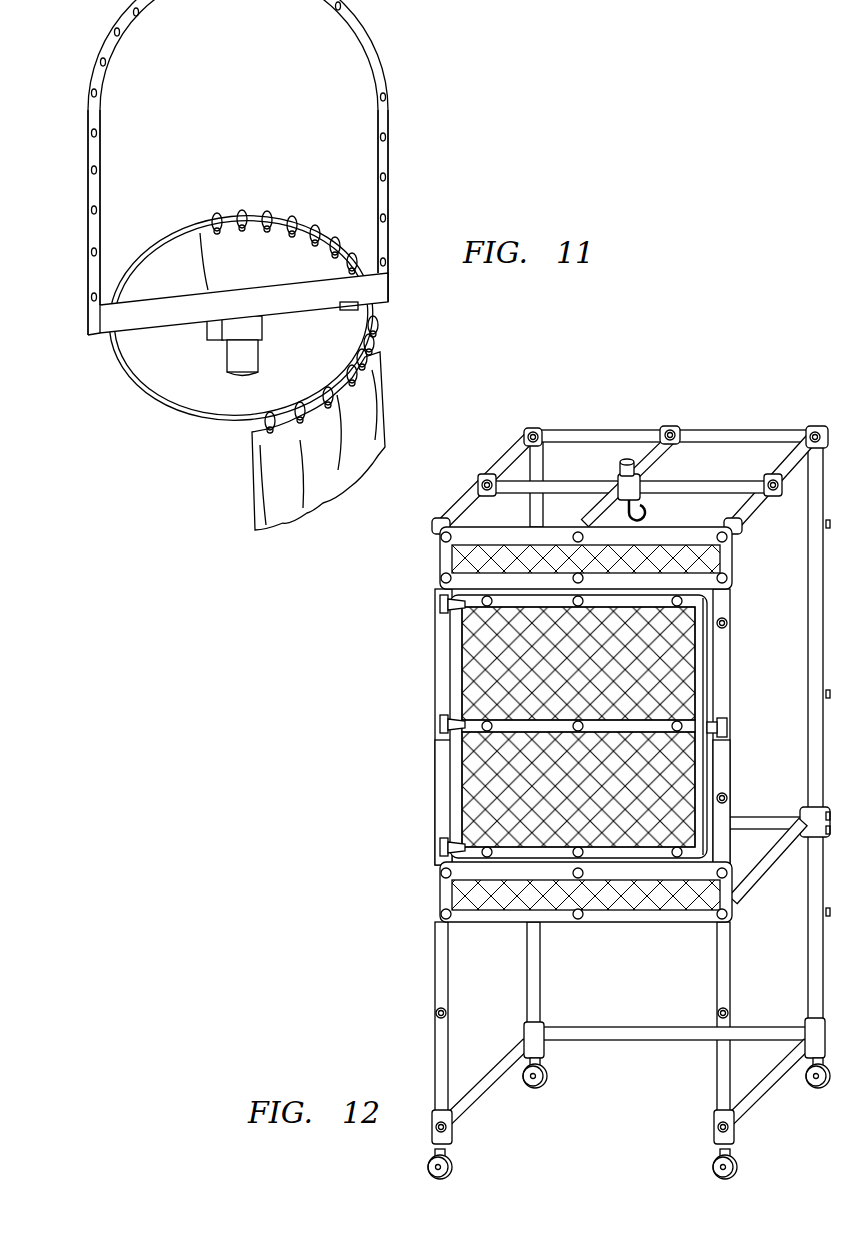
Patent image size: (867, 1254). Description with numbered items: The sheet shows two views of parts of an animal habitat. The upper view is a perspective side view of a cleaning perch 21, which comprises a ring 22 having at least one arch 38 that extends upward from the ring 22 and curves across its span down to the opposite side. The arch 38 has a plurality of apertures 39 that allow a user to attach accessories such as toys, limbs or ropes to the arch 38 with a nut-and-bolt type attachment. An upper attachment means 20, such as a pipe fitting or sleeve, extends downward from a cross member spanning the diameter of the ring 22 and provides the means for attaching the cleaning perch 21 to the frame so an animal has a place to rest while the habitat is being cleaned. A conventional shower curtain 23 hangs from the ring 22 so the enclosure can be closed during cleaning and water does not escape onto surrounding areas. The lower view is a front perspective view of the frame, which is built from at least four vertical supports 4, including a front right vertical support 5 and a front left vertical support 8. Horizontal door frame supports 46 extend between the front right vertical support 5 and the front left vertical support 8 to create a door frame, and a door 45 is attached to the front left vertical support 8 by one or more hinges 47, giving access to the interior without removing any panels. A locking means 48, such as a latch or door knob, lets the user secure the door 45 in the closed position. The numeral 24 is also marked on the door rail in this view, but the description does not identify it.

In FIG. 12, the vertical supports 4 is at (437, 668).
In FIG. 12, the front right vertical support 5 is at (732, 762).
In FIG. 12, the front left vertical support 8 is at (437, 772).
In FIG. 11, the upper attachment means 20 is at (226, 360).
In FIG. 11, the cleaning perch 21 is at (398, 58).
In FIG. 11, the ring 22 is at (130, 382).
In FIG. 11, the shower curtain 23 is at (290, 478).
In FIG. 12, the door 24 is at (683, 603).
In FIG. 11, the arch 38 is at (88, 195).
In FIG. 11, the apertures 39 is at (92, 133).
In FIG. 12, the door 45 is at (652, 683).
In FIG. 12, the horizontal door frame supports 46 is at (645, 600).
In FIG. 12, the hinges 47 is at (440, 606).
In FIG. 12, the locking means 48 is at (729, 726).